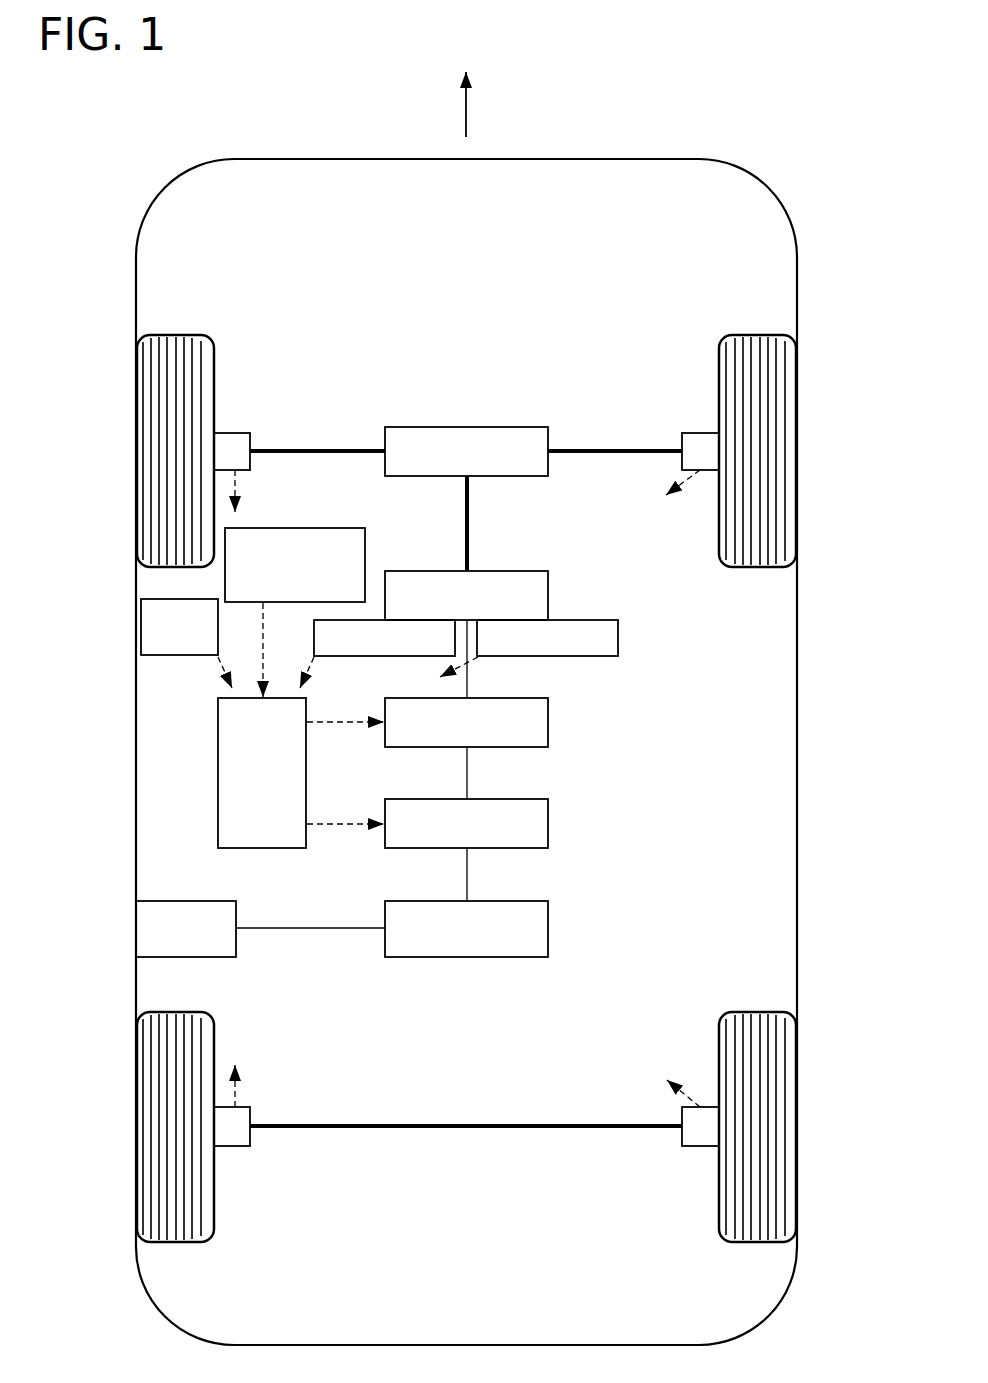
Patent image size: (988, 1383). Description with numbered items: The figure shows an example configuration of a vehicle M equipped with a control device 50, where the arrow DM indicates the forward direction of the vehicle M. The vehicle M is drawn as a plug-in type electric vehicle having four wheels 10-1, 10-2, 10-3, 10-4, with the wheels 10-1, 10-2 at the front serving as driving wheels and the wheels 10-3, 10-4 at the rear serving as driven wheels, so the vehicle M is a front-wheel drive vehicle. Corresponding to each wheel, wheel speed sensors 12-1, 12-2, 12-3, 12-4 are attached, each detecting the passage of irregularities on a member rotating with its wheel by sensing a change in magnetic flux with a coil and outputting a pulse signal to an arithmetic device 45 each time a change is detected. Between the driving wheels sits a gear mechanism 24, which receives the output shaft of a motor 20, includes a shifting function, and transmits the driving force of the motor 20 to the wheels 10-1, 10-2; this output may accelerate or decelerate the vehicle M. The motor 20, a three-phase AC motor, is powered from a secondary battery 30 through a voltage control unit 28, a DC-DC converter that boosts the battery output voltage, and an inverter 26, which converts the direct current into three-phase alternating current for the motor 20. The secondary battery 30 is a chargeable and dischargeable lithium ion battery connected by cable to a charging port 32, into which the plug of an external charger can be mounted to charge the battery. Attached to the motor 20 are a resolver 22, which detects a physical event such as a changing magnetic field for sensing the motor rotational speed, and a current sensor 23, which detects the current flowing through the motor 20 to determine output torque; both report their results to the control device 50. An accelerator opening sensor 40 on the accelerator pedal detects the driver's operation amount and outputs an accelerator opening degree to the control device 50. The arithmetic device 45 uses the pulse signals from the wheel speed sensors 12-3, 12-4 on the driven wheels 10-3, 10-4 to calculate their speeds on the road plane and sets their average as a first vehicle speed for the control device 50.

The vehicle M is at (814, 158).
The arrow indicating forward direction DM is at (484, 104).
The wheel 10-1 is at (137, 452).
The wheel 10-2 is at (797, 452).
The wheel 10-3 is at (137, 1127).
The wheel 10-4 is at (797, 1127).
The wheel speed sensor 12-1 is at (232, 433).
The wheel speed sensor 12-2 is at (700, 433).
The wheel speed sensor 12-3 is at (232, 1146).
The wheel speed sensor 12-4 is at (700, 1146).
The motor 20 is at (496, 571).
The resolver 22 is at (566, 620).
The current sensor 23 is at (345, 657).
The gear mechanism 24 is at (496, 427).
The inverter 26 is at (496, 698).
The voltage control unit (VCU) 28 is at (496, 799).
The secondary battery 30 is at (496, 901).
The charging port 32 is at (184, 901).
The accelerator opening sensor 40 is at (312, 528).
The arithmetic device 45 is at (178, 656).
The control device 50 is at (218, 773).